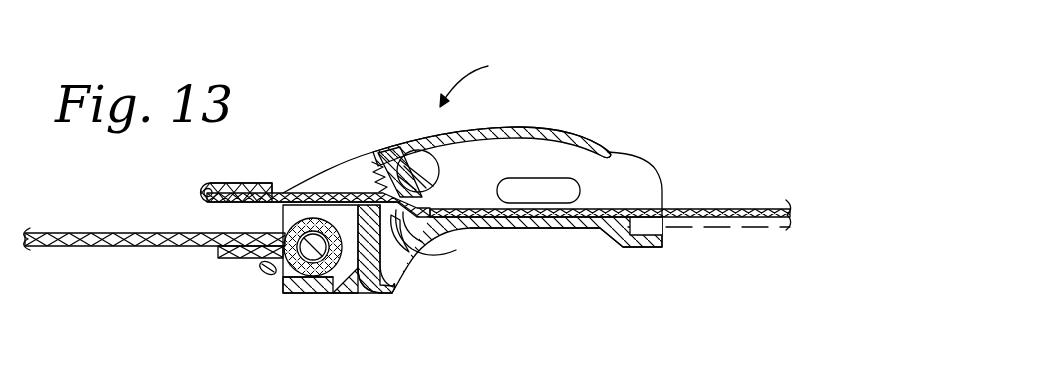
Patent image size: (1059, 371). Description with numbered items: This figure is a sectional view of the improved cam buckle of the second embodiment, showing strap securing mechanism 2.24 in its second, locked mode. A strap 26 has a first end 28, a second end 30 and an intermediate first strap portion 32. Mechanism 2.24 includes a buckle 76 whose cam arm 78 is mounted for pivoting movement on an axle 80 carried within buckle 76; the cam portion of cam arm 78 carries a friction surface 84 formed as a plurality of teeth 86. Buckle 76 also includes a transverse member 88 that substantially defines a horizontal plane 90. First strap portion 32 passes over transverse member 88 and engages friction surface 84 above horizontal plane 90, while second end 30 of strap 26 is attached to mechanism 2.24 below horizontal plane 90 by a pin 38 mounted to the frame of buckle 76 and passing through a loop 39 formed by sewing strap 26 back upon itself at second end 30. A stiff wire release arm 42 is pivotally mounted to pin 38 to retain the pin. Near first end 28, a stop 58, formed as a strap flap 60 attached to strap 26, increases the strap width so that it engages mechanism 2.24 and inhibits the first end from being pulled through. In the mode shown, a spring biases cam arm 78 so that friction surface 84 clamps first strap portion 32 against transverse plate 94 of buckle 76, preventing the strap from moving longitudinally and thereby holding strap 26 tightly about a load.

The strap securing mechanism 2.24 is at (488, 80).
The strap 26 is at (107, 248).
The first end 28 is at (207, 197).
The second end 30 is at (367, 216).
The first strap portion 32 is at (681, 206).
The pin 38 is at (328, 260).
The loop 39 is at (297, 201).
The release arm 42 is at (267, 276).
The stop 58 is at (229, 183).
The strap flap 60 is at (248, 183).
The buckle 76 is at (484, 171).
The cam arm 78 is at (601, 146).
The axle 80 is at (424, 141).
The friction surface 84 is at (363, 178).
The teeth 86 is at (371, 163).
The transverse member 88 is at (543, 229).
The horizontal plane 90 is at (687, 229).
The transverse plate 94 is at (389, 251).